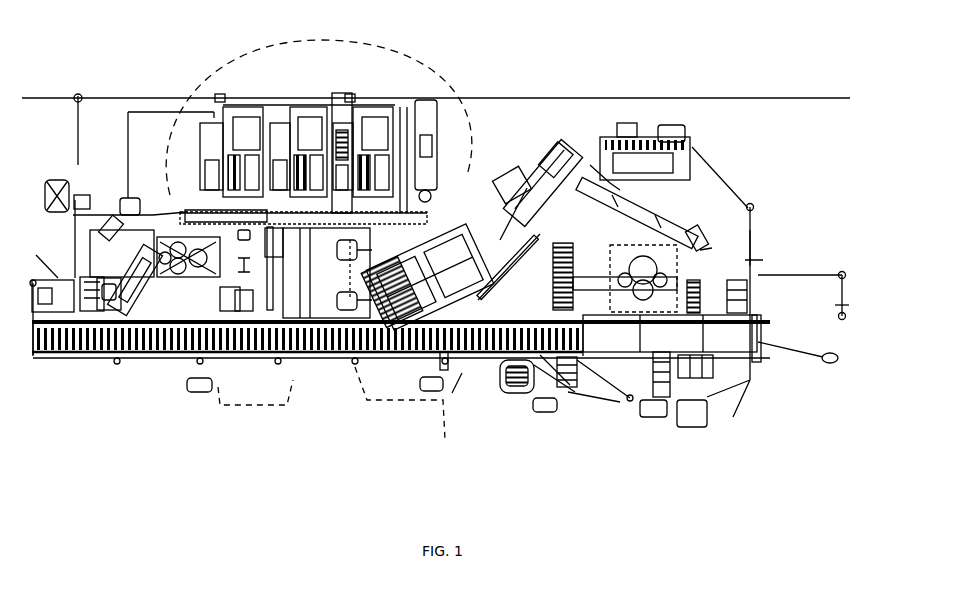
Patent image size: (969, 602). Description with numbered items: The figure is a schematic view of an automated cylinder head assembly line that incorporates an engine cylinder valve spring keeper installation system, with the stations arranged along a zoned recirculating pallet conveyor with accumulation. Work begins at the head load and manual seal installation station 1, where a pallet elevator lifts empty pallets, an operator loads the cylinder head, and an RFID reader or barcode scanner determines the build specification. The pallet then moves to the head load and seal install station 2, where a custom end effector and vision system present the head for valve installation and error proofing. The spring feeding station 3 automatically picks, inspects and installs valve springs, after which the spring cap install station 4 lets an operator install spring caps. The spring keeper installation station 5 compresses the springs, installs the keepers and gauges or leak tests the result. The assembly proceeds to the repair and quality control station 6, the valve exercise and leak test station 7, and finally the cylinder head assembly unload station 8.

The head load and manual seal installation station 1 is at (72, 370).
The head load and seal install station 2 is at (158, 370).
The spring feeding station 3 is at (319, 255).
The spring cap install station 4 is at (327, 370).
The spring keeper installation station 5 is at (438, 355).
The repair station and quality control station 6 is at (515, 407).
The valve exercise and leak test station 7 is at (680, 265).
The cylinder head assembly unload station 8 is at (693, 142).